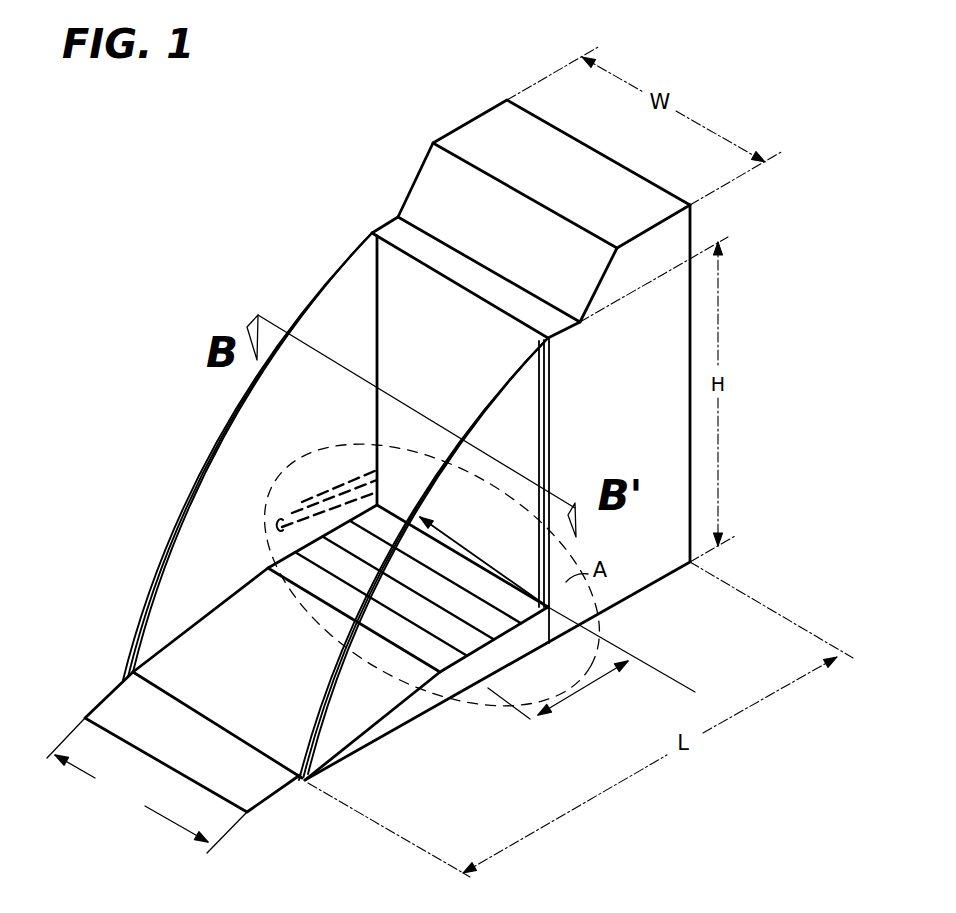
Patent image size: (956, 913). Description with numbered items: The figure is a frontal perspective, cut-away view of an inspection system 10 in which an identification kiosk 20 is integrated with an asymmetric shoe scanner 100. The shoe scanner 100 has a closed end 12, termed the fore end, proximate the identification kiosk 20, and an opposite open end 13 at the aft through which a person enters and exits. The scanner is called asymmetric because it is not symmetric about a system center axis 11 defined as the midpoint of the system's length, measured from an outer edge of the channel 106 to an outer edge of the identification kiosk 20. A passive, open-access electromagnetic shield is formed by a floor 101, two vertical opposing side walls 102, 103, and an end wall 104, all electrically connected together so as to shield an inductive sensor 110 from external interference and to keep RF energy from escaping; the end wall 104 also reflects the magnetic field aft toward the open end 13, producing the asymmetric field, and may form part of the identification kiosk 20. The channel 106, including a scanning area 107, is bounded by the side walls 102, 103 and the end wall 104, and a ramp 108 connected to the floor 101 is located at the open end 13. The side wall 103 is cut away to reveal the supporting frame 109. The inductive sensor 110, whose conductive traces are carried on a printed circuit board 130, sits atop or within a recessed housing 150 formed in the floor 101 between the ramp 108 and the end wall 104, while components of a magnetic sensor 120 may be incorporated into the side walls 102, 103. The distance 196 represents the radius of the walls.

The inspection system 10 is at (265, 208).
The system center axis 11 is at (680, 672).
The closed end 12 is at (362, 230).
The open end 13 is at (120, 653).
The identification kiosk 20 is at (602, 399).
The shoe scanner 100 is at (140, 552).
The floor 101 is at (219, 673).
The side wall 102 is at (182, 583).
The side wall 103 is at (330, 711).
The end wall 104 is at (415, 361).
The channel 106 is at (147, 785).
The scanning area 107 is at (558, 690).
The ramp 108 is at (159, 744).
The frame 109 is at (535, 340).
The inductive sensor 110 is at (410, 620).
The magnetic sensor 120 is at (323, 493).
The printed circuit board 130 is at (435, 641).
The recessed housing 150 is at (550, 608).
The distance 196 is at (497, 563).